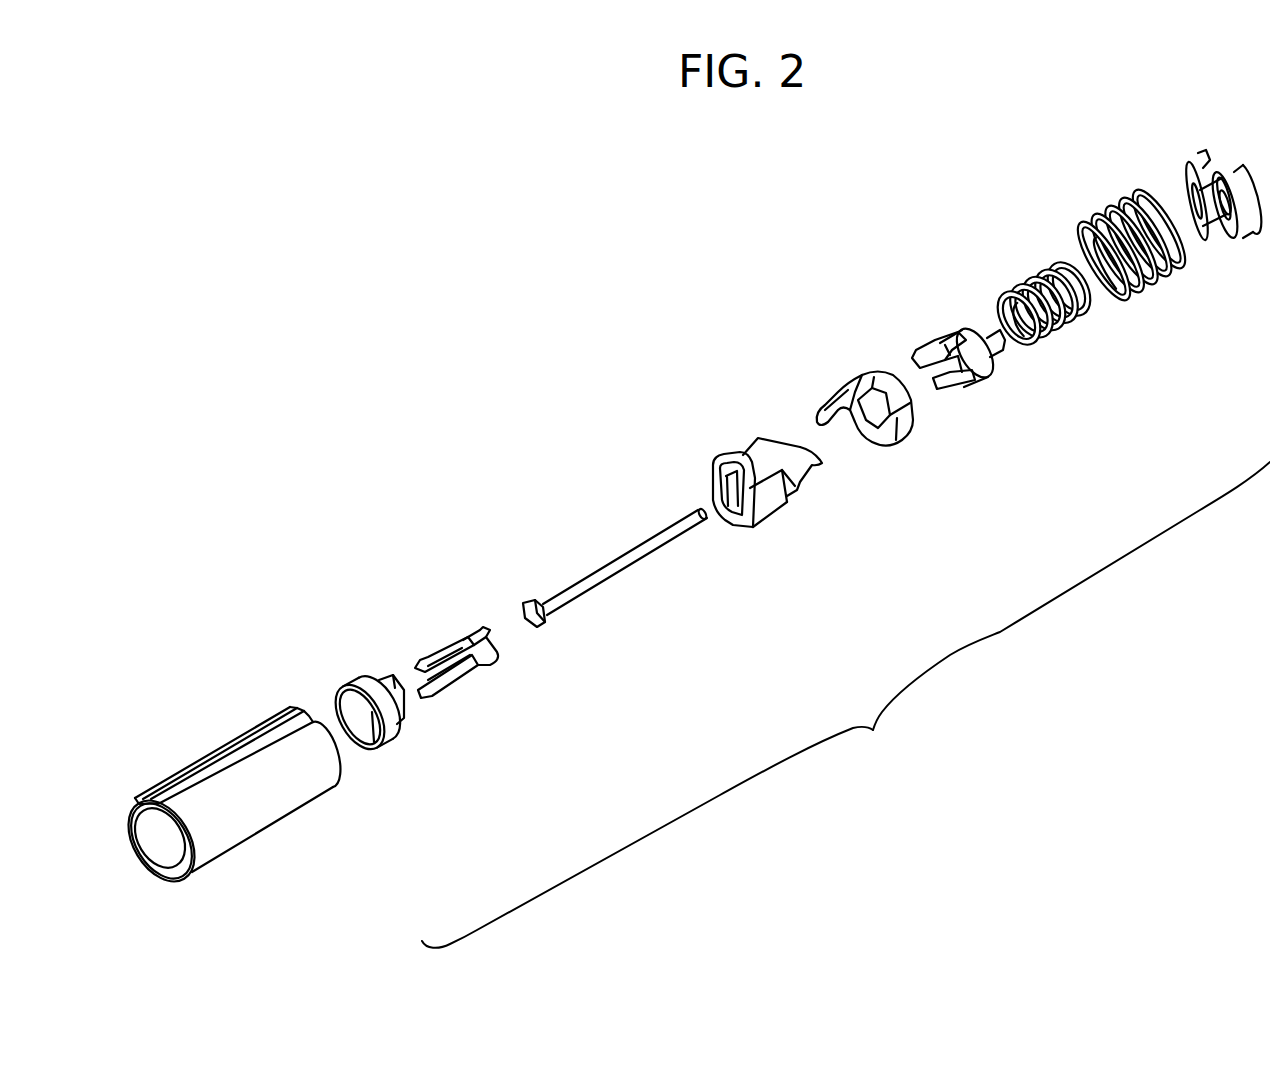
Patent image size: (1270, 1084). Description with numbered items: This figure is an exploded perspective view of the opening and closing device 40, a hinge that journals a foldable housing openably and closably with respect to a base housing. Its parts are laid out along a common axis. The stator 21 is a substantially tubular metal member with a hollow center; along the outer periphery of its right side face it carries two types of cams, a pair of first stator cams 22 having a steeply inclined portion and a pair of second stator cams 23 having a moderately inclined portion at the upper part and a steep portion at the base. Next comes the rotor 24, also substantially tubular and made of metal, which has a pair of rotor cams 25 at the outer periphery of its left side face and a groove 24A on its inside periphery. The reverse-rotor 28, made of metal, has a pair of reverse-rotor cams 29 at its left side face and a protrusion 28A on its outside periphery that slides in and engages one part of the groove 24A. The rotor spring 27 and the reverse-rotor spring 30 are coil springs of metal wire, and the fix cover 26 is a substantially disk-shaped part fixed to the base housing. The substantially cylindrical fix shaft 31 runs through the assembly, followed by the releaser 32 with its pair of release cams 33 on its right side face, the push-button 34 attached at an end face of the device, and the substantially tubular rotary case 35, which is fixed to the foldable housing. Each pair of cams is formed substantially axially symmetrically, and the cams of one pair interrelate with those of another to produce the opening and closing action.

The stator 21 is at (811, 516).
The first stator cam 22 is at (848, 497).
The second stator cam 23 is at (817, 467).
The rotor 24 is at (880, 395).
The groove 24A is at (843, 393).
The rotor cam 25 is at (828, 398).
The fix cover 26 is at (1192, 162).
The rotor spring 27 is at (1120, 213).
The reverse-rotor 28 is at (973, 361).
The protrusion 28A is at (978, 382).
The reverse-rotor cam 29 is at (925, 350).
The reverse-rotor spring 30 is at (1030, 282).
The fix shaft 31 is at (622, 573).
The releaser 32 is at (460, 678).
The release cam 33 is at (500, 688).
The push-button 34 is at (392, 740).
The rotary case 35 is at (303, 797).
The opening and closing device 40 is at (859, 770).